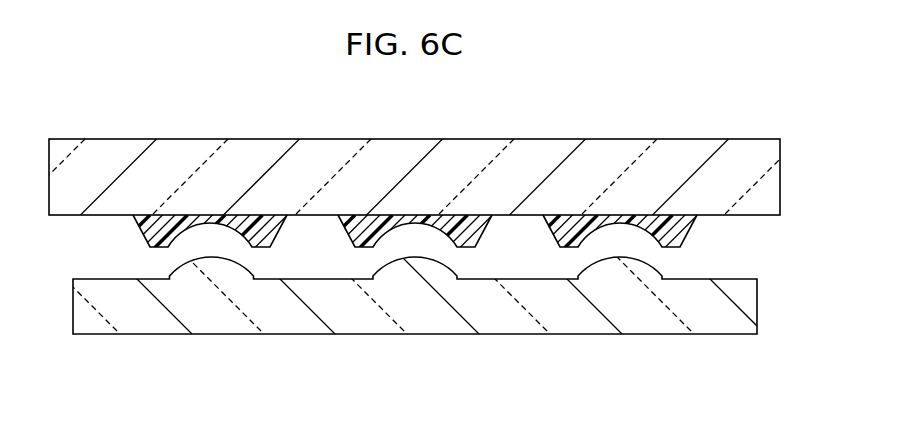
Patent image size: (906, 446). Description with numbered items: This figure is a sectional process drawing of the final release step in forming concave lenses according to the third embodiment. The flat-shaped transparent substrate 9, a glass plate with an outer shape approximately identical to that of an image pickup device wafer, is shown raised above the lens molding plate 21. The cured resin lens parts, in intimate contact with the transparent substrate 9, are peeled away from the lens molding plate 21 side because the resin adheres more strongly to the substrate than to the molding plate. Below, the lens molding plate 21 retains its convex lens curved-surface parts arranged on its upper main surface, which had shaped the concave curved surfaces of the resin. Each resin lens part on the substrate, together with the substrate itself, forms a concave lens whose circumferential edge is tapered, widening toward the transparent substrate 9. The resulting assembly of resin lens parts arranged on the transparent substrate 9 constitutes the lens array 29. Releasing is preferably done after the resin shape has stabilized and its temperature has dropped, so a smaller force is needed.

The lens array 29 is at (103, 103).
The transparent substrate 9 is at (553, 153).
The lens molding plate 21 is at (88, 319).